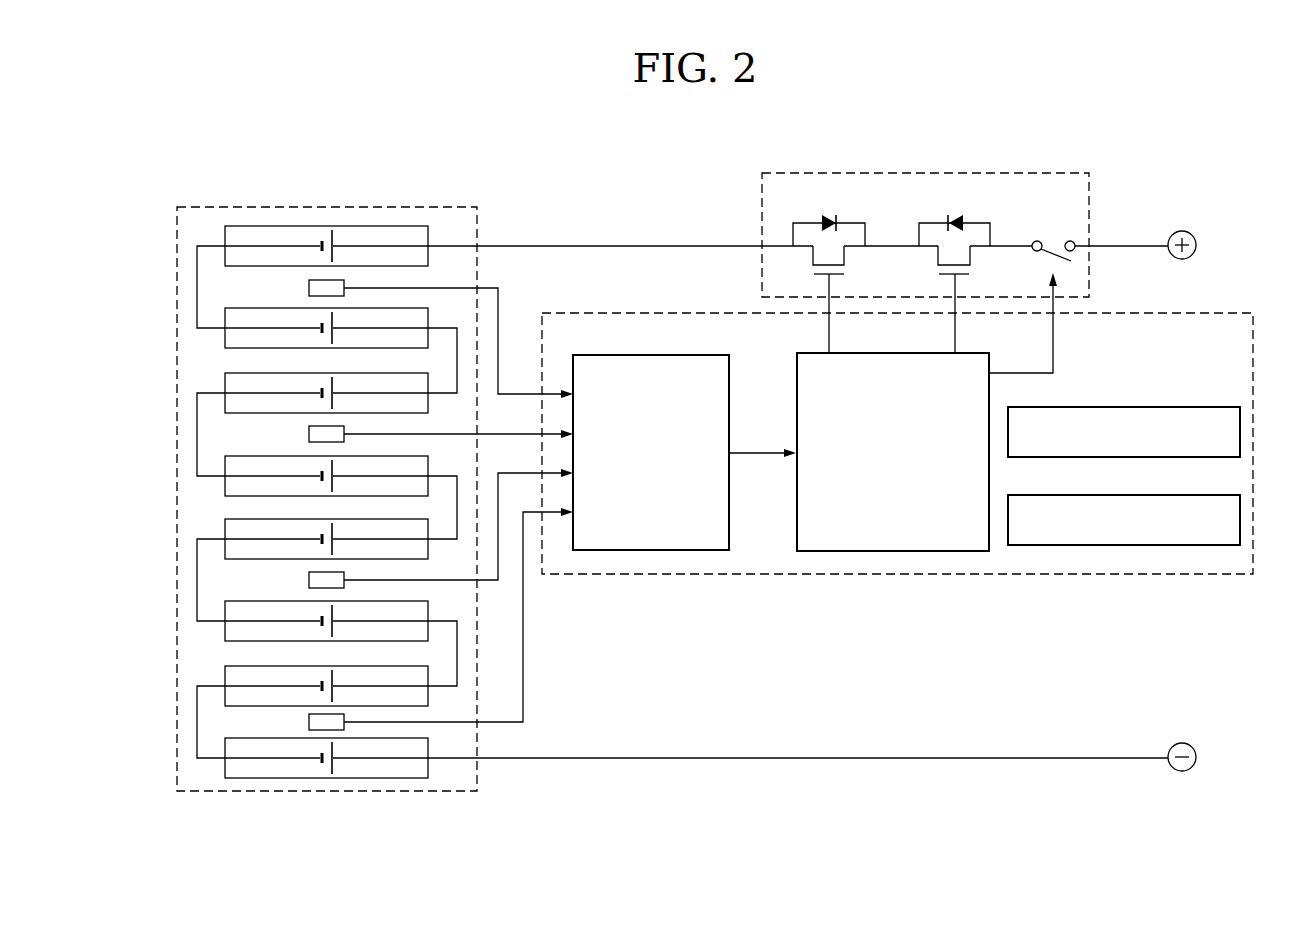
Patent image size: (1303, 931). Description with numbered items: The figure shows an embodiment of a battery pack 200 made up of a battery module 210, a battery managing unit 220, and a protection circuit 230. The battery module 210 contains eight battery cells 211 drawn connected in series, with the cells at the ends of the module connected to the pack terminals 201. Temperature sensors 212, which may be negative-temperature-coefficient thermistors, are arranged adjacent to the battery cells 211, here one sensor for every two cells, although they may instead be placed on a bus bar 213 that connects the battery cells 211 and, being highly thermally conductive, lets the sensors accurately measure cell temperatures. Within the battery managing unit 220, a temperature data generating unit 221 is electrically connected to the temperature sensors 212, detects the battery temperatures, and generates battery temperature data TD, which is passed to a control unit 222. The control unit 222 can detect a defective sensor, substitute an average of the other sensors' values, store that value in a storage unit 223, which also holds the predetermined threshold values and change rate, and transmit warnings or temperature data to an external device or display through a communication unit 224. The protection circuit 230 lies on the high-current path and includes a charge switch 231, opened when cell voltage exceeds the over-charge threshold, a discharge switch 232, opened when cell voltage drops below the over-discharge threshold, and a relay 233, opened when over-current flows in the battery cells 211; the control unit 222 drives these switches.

The battery pack 200 is at (687, 446).
The external terminals 201 is at (1188, 231).
The battery module 210 is at (333, 207).
The battery cell 211 is at (225, 232).
The temperature sensor 212 is at (309, 288).
The bus bar 213 is at (197, 312).
The battery managing unit 220 is at (1148, 313).
The temperature data generating unit 221 is at (668, 355).
The control unit 222 is at (880, 353).
The storage unit 223 is at (1128, 407).
The communication unit 224 is at (1128, 495).
The protection circuit 230 is at (1010, 172).
The charge switch 231 is at (831, 219).
The discharge switch 232 is at (955, 219).
The relay 233 is at (1050, 240).